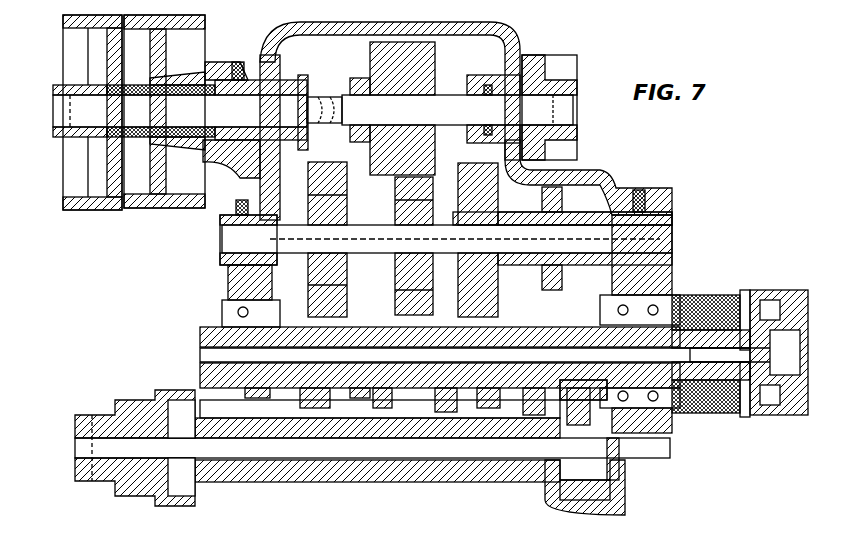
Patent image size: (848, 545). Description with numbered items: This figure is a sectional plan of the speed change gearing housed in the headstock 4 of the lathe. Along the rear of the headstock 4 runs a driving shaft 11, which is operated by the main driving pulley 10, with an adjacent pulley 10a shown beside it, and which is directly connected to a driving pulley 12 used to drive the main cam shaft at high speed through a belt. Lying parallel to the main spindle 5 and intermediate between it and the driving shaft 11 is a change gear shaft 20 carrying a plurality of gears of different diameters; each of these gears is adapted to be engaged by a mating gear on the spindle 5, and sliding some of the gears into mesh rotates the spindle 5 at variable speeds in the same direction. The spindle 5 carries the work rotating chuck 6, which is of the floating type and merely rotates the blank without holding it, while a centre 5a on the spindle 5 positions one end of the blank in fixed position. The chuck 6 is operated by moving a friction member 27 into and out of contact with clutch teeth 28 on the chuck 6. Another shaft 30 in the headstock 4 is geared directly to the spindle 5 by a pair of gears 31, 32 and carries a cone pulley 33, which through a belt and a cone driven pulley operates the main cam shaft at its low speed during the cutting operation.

The headstock 4 is at (606, 180).
The main spindle 5 is at (210, 353).
The centre 5a is at (703, 348).
The chuck 6 is at (795, 400).
The main driving pulley 10 is at (95, 212).
The pulley 10a is at (170, 205).
The driving shaft 11 is at (247, 98).
The driving pulley 12 is at (545, 62).
The change gear shaft 20 is at (227, 273).
The friction member 27 is at (720, 305).
The clutch teeth 28 is at (740, 413).
The shaft 30 is at (383, 455).
The gear 31 is at (560, 485).
The gear 32 is at (570, 392).
The cone pulley 33 is at (140, 495).